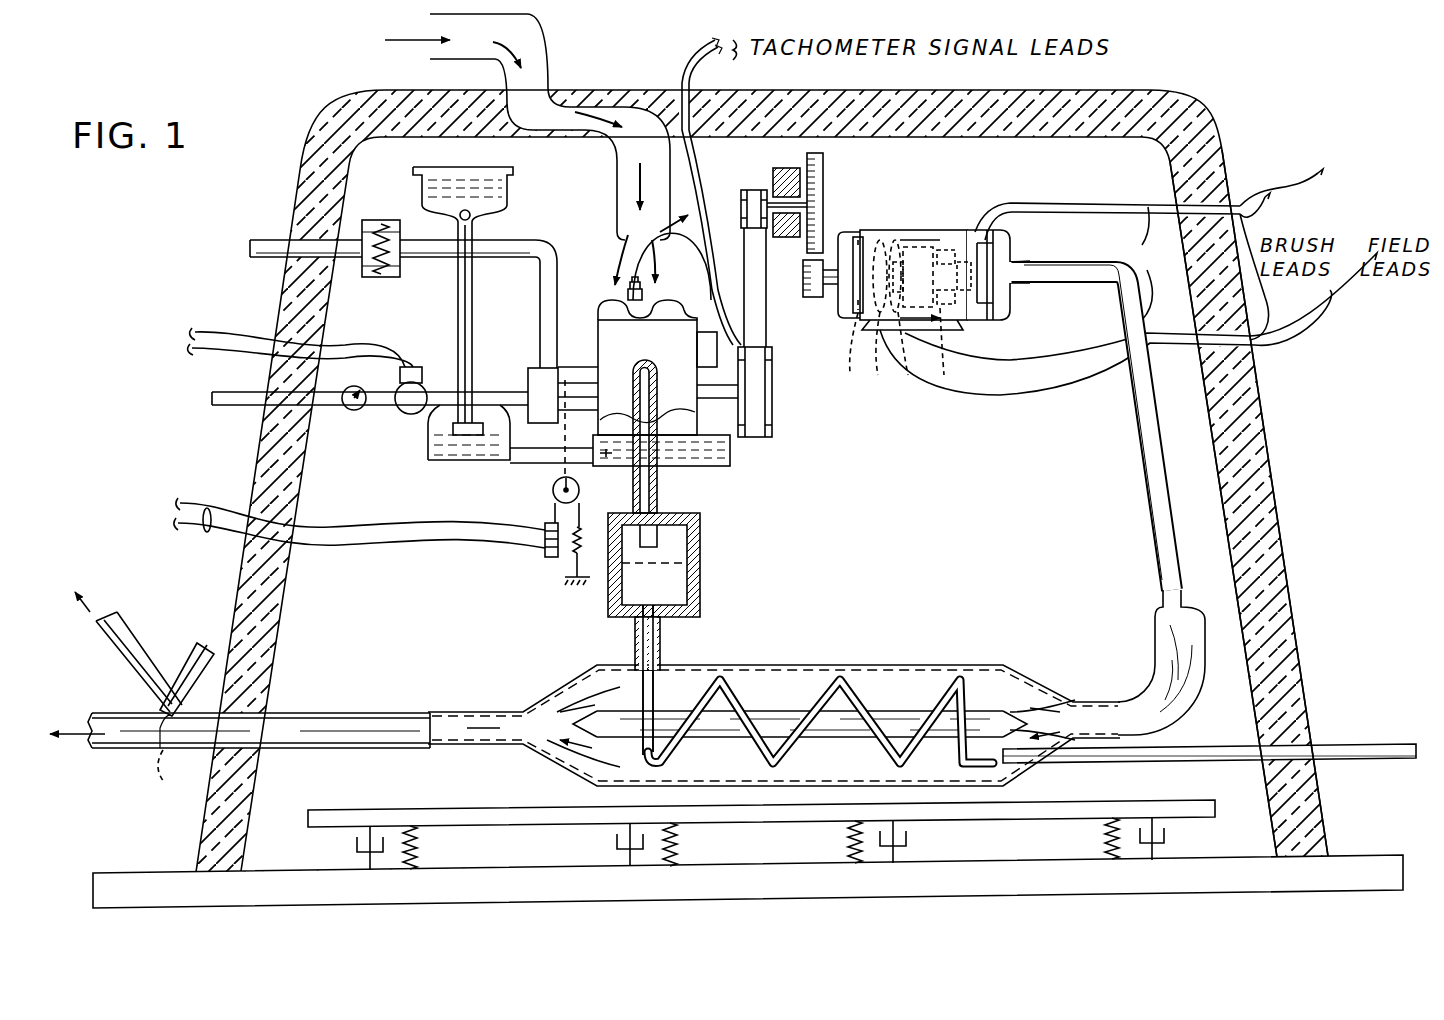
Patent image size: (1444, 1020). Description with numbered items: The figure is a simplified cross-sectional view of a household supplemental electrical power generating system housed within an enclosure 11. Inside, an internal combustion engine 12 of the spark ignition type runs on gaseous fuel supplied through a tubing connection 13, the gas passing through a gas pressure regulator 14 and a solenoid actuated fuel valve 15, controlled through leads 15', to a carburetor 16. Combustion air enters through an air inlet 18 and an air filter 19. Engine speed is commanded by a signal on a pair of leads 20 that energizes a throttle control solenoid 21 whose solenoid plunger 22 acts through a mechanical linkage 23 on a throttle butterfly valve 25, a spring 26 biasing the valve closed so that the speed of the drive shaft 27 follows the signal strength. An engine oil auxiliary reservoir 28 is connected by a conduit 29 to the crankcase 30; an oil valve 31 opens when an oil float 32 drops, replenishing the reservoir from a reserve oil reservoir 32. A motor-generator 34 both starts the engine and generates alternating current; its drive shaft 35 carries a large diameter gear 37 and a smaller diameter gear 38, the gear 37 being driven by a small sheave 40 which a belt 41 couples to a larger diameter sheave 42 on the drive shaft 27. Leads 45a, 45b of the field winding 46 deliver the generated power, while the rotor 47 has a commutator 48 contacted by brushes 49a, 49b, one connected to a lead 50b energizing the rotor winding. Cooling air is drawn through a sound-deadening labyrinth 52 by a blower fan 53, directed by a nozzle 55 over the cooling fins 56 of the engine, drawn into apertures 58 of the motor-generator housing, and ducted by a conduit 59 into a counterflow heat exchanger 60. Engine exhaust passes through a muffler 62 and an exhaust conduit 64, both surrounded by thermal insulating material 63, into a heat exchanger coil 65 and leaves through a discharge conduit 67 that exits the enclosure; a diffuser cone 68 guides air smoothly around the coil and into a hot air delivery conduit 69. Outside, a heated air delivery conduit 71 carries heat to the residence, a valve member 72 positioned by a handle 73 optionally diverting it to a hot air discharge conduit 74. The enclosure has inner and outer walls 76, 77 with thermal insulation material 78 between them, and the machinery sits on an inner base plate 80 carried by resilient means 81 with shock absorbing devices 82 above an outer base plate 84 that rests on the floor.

The enclosure 11 is at (290, 170).
The internal combustion engine 12 is at (598, 325).
The tubing connection 13 is at (225, 406).
The gas pressure regulator 14 is at (352, 412).
The solenoid actuated fuel valve 15 is at (392, 421).
The leads 15' is at (300, 329).
The carburetor 16 is at (540, 356).
The air inlet 18 is at (258, 243).
The air filter 19 is at (377, 278).
The pair of leads 20 is at (208, 530).
The throttle control solenoid 21 is at (545, 552).
The solenoid plunger 22 is at (545, 528).
The mechanical linkage 23 is at (553, 488).
The throttle butterfly valve 25 is at (556, 385).
The spring 26 is at (573, 560).
The drive shaft 27 is at (730, 420).
The engine oil auxiliary reservoir 28 is at (432, 462).
The conduit 29 is at (606, 462).
The crankcase 30 is at (712, 468).
The oil valve 31 is at (470, 216).
The oil float 32 is at (505, 195).
The motor-generator 34 is at (858, 228).
The drive shaft 35 is at (830, 300).
The large diameter gear 37 is at (823, 163).
The smaller diameter gear 38 is at (808, 297).
The sheave 40 is at (738, 200).
The belt 41 is at (768, 315).
The larger diameter sheave 42 is at (772, 418).
The lead 45a is at (1128, 203).
The lead 45b is at (1170, 350).
The field winding 46 is at (963, 262).
The rotor 47 is at (908, 319).
The commutator 48 is at (1008, 244).
The brush 49a is at (934, 329).
The brush 49b is at (947, 250).
The lead 50b is at (1158, 263).
The sound-deadening labyrinth 52 is at (560, 68).
The blower fan 53 is at (881, 315).
The nozzle 55 is at (617, 170).
The cooling fins 56 is at (650, 298).
The apertures 58 is at (849, 319).
The conduit 59 is at (1135, 418).
The heat exchanger 60 is at (975, 660).
The muffler 62 is at (675, 590).
The thermal insulating material 63 is at (700, 600).
The exhaust conduit 64 is at (660, 652).
The heat exchanger coil 65 is at (745, 680).
The discharge conduit 67 is at (1205, 748).
The diffuser cone 68 is at (1005, 695).
The hot air delivery conduit 69 is at (358, 712).
The heated air delivery conduit 71 is at (100, 750).
The valve member 72 is at (172, 778).
The handle 73 is at (185, 680).
The hot air discharge conduit 74 is at (118, 628).
The inner wall 76 is at (1218, 505).
The outer wall 77 is at (1272, 530).
The thermal insulation material 78 is at (1268, 622).
The inner base plate 80 is at (1180, 800).
The resilient means 81 is at (420, 845).
The shock absorbing devices 82 is at (357, 845).
The outer base plate 84 is at (1365, 856).